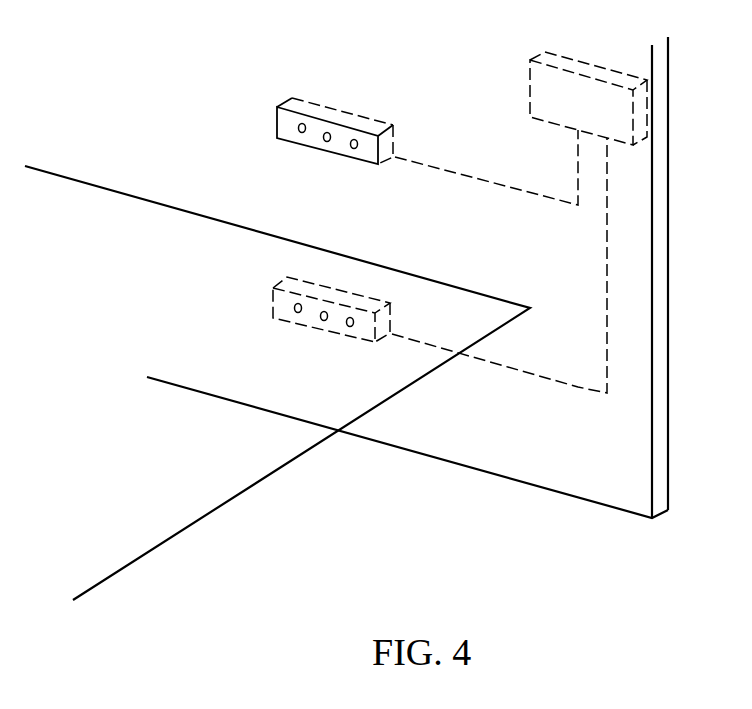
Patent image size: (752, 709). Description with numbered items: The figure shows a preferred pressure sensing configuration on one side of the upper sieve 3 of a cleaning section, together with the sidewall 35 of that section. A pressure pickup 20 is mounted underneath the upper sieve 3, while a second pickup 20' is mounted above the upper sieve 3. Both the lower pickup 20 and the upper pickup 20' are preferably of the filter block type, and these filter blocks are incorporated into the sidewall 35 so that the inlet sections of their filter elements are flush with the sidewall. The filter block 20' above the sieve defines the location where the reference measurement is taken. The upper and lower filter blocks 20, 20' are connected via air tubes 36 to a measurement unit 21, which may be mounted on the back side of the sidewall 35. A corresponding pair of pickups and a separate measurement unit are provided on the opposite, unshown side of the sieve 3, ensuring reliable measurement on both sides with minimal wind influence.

The upper sieve 3 is at (225, 478).
The pressure pickup 20 is at (329, 329).
The second pickup 20' is at (335, 94).
The measurement unit 21 is at (577, 87).
The sidewall 35 is at (612, 489).
The air tubes 36 is at (578, 387).